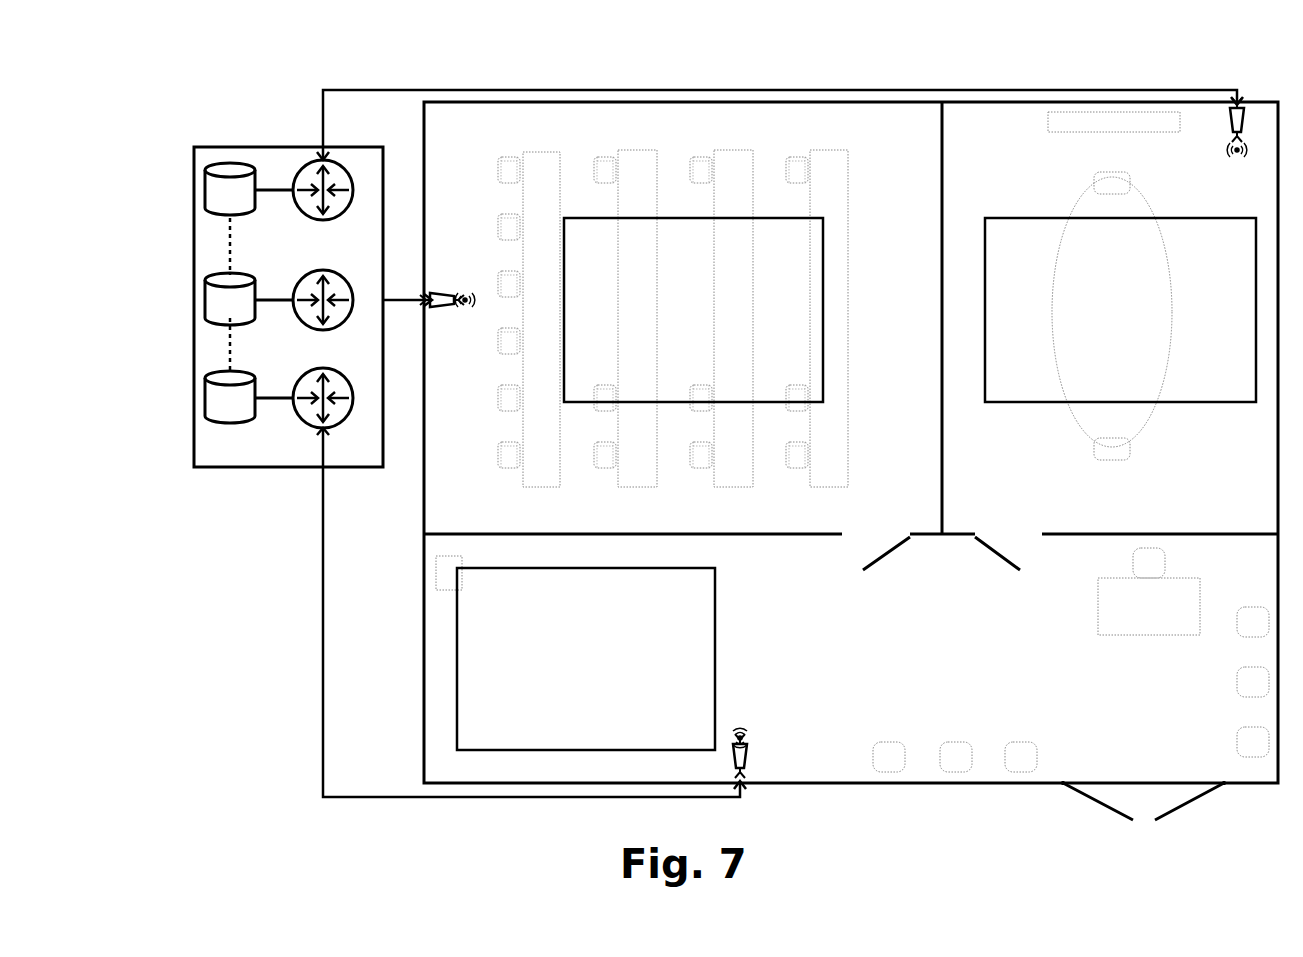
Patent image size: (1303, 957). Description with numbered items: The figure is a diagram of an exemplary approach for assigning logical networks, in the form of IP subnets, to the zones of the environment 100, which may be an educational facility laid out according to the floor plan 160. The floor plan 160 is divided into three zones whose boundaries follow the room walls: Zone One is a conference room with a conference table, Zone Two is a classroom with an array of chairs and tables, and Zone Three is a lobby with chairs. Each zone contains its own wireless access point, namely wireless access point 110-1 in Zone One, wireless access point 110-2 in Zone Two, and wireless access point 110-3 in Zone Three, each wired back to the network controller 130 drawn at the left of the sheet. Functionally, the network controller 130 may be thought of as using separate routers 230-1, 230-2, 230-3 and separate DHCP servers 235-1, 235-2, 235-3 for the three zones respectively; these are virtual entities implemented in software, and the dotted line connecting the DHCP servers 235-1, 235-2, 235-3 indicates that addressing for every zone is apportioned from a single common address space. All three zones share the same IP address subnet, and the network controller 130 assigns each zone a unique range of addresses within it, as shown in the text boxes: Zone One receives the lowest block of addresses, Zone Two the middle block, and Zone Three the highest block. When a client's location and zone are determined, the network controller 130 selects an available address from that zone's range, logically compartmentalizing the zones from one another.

The environment 100 is at (200, 58).
The network controller 130 is at (278, 468).
The DHCP server 235-1 is at (208, 196).
The DHCP server 235-2 is at (208, 304).
The DHCP server 235-3 is at (208, 402).
The router 230-1 is at (314, 214).
The router 230-2 is at (309, 318).
The router 230-3 is at (305, 416).
The wireless access point 110-1 is at (1228, 125).
The wireless access point 110-2 is at (462, 254).
The wireless access point 110-3 is at (752, 762).
The floor plan 160 is at (962, 795).